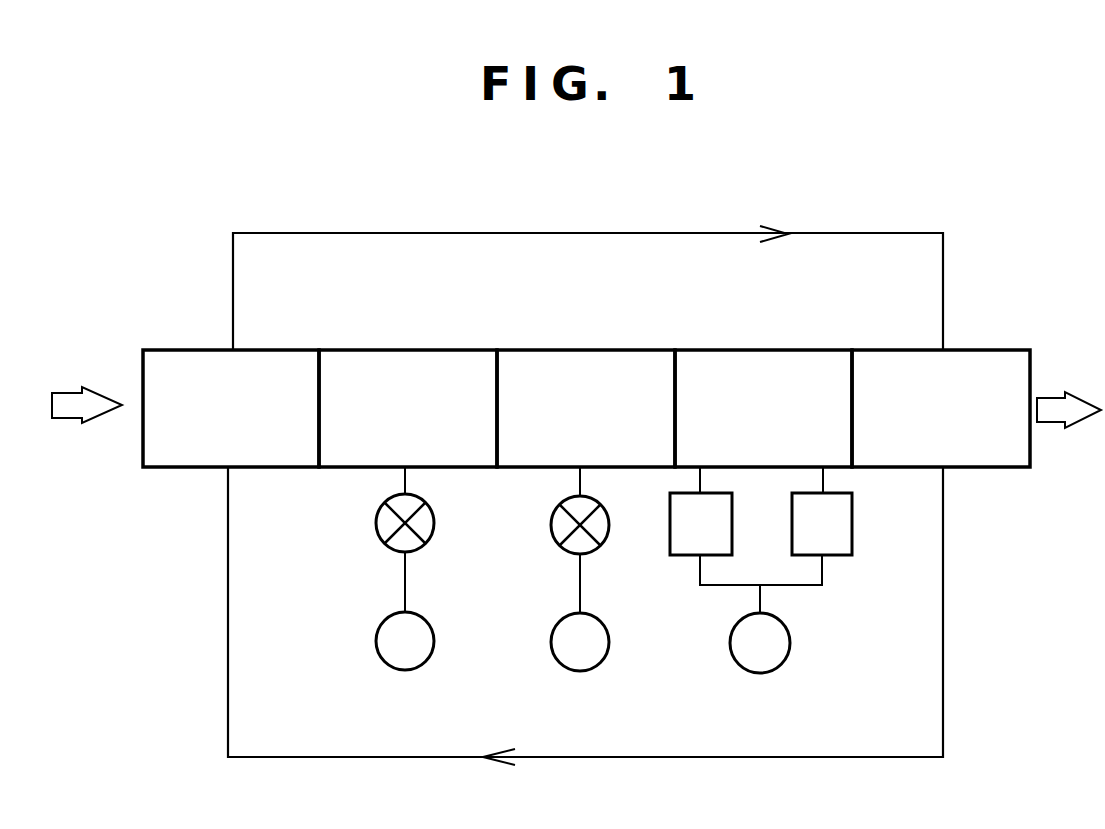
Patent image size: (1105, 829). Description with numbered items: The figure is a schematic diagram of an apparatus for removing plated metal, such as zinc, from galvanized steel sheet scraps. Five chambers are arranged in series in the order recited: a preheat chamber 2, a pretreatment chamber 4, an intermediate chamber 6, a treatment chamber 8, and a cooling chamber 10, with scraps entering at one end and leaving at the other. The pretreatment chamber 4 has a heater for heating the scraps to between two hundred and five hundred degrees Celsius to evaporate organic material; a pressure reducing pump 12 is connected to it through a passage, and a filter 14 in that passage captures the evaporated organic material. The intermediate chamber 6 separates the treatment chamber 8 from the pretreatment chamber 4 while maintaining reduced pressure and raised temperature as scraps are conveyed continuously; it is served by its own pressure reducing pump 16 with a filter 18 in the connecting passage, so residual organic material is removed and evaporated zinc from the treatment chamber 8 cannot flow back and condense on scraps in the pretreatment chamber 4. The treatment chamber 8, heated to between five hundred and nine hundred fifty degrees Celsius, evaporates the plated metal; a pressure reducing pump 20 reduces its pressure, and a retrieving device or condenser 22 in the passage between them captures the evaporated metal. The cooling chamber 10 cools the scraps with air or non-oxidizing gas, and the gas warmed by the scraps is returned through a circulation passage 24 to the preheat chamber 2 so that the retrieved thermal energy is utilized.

The preheat chamber 2 is at (276, 350).
The pretreatment chamber 4 is at (423, 350).
The intermediate chamber 6 is at (618, 350).
The treatment chamber 8 is at (789, 350).
The cooling chamber 10 is at (917, 350).
The pressure reducing pump 12 is at (376, 645).
The filter 14 is at (376, 517).
The pressure reducing pump 16 is at (551, 642).
The filter 18 is at (551, 532).
The pressure reducing pump 20 is at (730, 646).
The retrieving device or condenser 22 is at (687, 557).
The circulation passage 24 is at (693, 213).